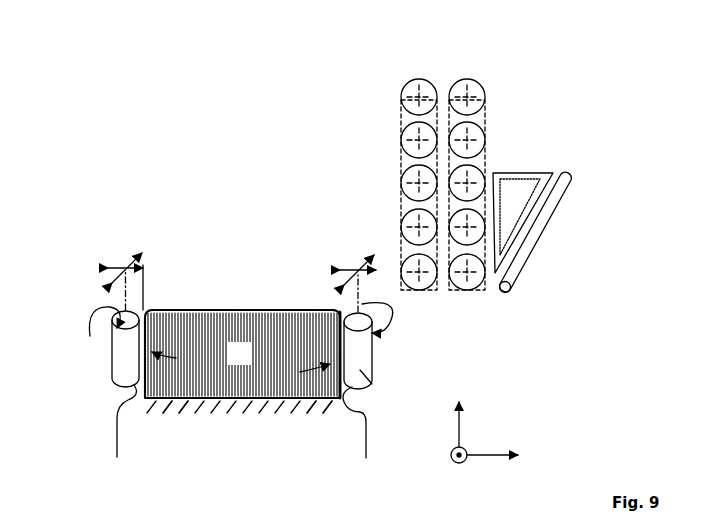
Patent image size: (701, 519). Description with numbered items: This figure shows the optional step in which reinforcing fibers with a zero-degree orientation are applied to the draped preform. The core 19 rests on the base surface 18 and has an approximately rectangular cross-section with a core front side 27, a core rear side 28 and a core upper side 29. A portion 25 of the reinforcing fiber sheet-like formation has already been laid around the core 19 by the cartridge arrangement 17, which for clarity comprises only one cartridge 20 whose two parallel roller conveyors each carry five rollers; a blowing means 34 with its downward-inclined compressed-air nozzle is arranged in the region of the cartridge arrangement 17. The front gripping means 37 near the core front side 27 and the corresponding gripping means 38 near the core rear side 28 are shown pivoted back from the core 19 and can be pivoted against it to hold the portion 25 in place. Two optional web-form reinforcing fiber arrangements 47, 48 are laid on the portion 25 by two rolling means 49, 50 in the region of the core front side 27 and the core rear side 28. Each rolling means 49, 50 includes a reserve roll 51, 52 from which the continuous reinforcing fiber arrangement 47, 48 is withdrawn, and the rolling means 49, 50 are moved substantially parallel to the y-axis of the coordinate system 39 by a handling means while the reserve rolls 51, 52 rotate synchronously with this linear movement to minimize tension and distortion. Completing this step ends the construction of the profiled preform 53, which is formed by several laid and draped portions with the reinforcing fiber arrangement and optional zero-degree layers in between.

The cartridge arrangement 17 is at (398, 155).
The cartridge 20 is at (391, 68).
The blowing means 34 is at (522, 170).
The core 19 is at (250, 259).
The portion 25 is at (200, 308).
The profiled preform 53 is at (239, 302).
The core upper side 29 is at (285, 303).
The reinforcing fiber arrangement 48 is at (341, 310).
The base surface 18 is at (262, 404).
The core front side 27 is at (172, 400).
The core rear side 28 is at (316, 400).
The reinforcing fiber arrangement 47 is at (143, 268).
The rolling means 49 is at (107, 288).
The reserve roll 51 is at (112, 367).
The rolling means 50 is at (382, 352).
The reserve roll 52 is at (371, 385).
The front gripping means 37 is at (117, 440).
The gripping means 38 is at (366, 433).
The coordinate system 39 is at (466, 449).